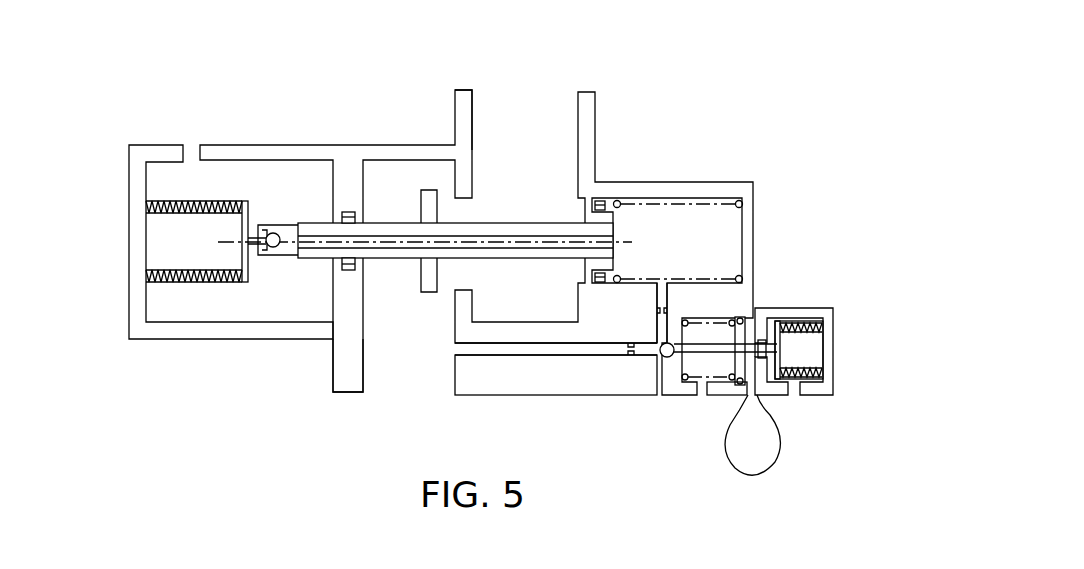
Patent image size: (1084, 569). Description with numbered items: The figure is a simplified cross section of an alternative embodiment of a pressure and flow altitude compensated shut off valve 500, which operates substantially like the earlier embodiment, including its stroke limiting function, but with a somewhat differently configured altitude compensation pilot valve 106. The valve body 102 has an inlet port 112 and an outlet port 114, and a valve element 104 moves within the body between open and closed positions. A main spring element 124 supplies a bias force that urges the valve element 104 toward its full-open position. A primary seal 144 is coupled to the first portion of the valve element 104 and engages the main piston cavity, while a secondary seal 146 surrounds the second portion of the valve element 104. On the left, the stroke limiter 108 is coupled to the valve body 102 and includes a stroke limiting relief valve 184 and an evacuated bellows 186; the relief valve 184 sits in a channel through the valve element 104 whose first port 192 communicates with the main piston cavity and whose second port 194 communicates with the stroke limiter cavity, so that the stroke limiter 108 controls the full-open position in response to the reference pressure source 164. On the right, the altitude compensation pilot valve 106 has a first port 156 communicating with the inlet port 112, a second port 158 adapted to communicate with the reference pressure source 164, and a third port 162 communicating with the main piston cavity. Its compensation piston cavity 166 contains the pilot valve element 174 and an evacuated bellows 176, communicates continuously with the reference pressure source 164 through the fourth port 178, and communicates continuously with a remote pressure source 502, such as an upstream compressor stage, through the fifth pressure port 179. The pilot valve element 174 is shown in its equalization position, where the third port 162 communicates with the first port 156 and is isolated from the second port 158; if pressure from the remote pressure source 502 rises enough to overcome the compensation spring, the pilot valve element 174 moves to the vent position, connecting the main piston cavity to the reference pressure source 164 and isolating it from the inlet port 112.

The pressure and flow altitude compensated shut off valve 500 is at (745, 95).
The stroke limiter 108 is at (130, 123).
The valve body 102 is at (395, 137).
The outlet port 114 is at (497, 99).
The valve element 104 is at (525, 213).
The inlet port 112 is at (400, 387).
The main spring element 124 is at (695, 198).
The primary seal 144 is at (601, 205).
The first port 192 is at (613, 236).
The second port 158 is at (675, 343).
The third port 162 is at (657, 333).
The first port 156 is at (622, 350).
The pilot valve element 174 is at (668, 358).
The fourth port 178 is at (700, 395).
The compensation piston cavity 166 is at (752, 325).
The fifth pressure port 179 is at (752, 387).
The altitude compensation pilot valve 106 is at (853, 318).
The evacuated bellows 176 is at (813, 322).
The reference pressure source 164 is at (821, 385).
The remote pressure source 502 is at (765, 462).
The secondary seal 146 is at (350, 268).
The evacuated bellows 186 is at (180, 285).
The second port 194 is at (259, 245).
The stroke limiting relief valve 184 is at (272, 231).